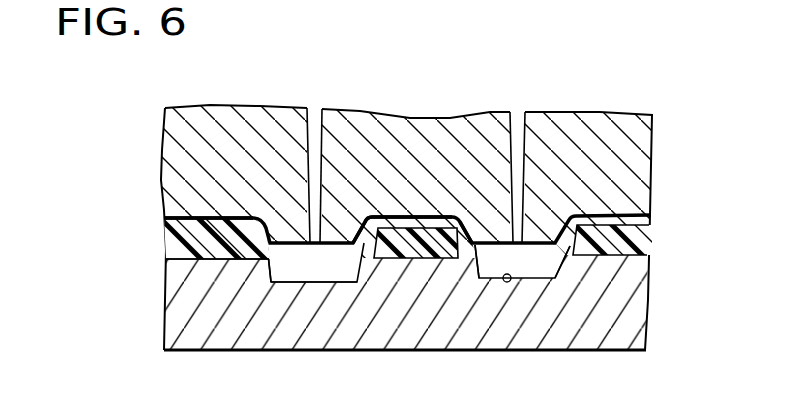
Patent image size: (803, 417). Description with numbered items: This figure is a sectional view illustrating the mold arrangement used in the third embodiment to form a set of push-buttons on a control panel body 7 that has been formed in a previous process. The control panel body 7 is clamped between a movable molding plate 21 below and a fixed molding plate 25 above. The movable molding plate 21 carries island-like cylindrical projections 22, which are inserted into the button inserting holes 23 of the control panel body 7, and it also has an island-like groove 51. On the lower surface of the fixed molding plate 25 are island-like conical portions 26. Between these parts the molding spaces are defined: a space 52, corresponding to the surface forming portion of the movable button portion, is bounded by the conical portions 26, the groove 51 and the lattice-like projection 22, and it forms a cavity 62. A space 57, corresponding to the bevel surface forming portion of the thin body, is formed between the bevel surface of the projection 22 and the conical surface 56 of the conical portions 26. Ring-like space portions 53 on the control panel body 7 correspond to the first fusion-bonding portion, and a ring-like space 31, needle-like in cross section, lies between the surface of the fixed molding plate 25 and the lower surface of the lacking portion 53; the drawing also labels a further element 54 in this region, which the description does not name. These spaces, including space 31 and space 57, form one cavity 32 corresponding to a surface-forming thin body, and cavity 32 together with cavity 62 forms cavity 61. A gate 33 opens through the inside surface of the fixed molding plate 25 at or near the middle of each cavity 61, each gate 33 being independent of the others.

The control panel body 7 is at (647, 255).
The movable molding plate 21 is at (590, 330).
The cylindrical projections 22 is at (346, 283).
The button inserting holes 23 is at (571, 250).
The fixed molding plate 25 is at (645, 148).
The conical portions 26 is at (272, 252).
The space 31 is at (244, 219).
The cavity 32 is at (484, 222).
The gate 33 is at (309, 228).
The groove 51 is at (507, 282).
The space 52 is at (320, 270).
The ring-like space portions 53 is at (186, 219).
The electrode 54 is at (392, 228).
The conical surface 56 is at (247, 252).
The space 57 is at (364, 224).
The cavity 61 is at (340, 268).
The cavity 62 is at (300, 271).